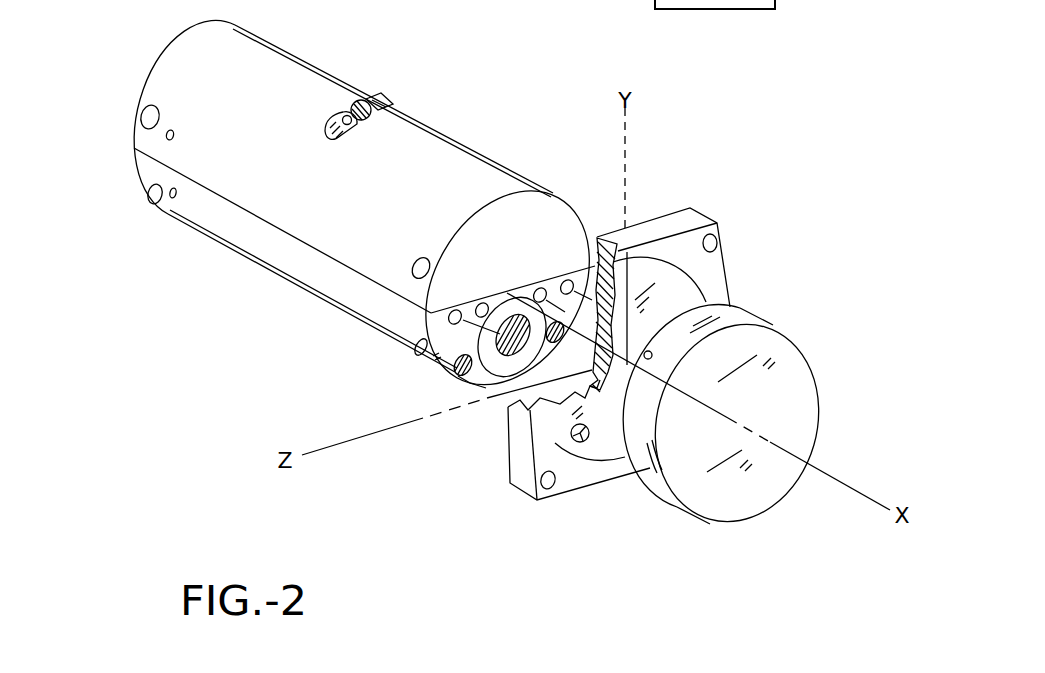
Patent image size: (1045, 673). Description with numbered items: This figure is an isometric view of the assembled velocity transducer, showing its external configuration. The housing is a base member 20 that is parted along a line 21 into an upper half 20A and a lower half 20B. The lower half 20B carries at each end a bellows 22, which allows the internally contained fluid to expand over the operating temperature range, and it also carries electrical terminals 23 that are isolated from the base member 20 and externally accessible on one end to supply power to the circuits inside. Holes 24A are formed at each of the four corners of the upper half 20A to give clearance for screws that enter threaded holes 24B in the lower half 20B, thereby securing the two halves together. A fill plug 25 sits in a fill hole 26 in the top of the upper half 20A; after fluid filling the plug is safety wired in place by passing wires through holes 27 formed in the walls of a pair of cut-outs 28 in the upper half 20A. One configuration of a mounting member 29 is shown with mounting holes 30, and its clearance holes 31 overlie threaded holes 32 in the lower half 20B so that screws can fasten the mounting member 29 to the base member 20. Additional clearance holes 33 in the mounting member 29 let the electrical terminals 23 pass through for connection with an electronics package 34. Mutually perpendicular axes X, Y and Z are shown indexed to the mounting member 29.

The base member 20 is at (505, 135).
The upper half of base member 20A is at (561, 200).
The lower half of base member 20B is at (468, 383).
The parting line 21 is at (508, 293).
The bellows 22 is at (500, 355).
The electrical terminals 23 is at (458, 314).
The holes 24A is at (146, 116).
The threaded holes 24B is at (150, 197).
The fill plug 25 is at (368, 120).
The fill hole 26 is at (384, 106).
The holes 27 is at (344, 113).
The cut-outs 28 is at (325, 131).
The mounting member 29 is at (698, 211).
The mounting holes 30 is at (718, 246).
The clearance holes 31 is at (590, 433).
The threaded holes 32 is at (456, 370).
The clearance holes 33 is at (646, 352).
The electronics package 34 is at (775, 325).